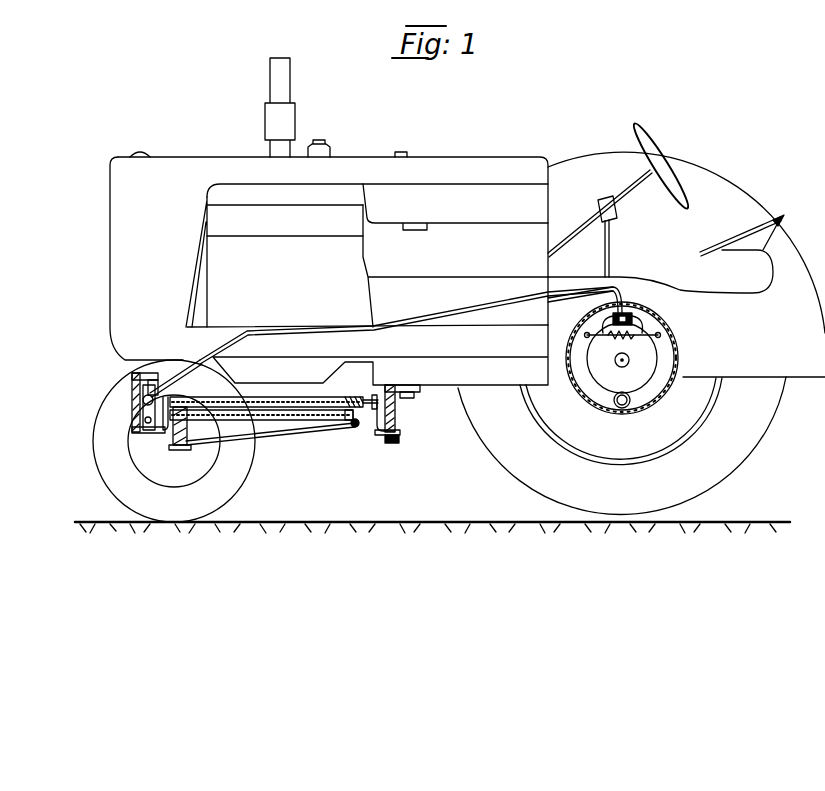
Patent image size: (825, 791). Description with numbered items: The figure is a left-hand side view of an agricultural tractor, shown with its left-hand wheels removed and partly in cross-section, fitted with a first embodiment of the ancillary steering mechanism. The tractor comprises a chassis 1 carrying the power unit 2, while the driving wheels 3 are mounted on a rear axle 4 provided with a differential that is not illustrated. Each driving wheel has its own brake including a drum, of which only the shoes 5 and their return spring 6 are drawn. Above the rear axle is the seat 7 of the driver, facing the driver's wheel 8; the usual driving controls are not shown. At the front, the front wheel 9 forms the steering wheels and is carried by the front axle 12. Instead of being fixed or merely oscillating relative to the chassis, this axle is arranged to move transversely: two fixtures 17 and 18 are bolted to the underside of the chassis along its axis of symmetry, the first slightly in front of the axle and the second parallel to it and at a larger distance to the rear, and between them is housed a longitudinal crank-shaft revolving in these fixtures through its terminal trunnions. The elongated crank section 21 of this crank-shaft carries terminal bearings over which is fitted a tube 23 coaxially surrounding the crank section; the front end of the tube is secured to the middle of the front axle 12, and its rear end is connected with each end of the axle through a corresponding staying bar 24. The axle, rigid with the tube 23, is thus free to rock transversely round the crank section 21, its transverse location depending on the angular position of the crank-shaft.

The chassis 1 is at (443, 370).
The power unit 2 is at (248, 200).
The driving wheels 3 is at (722, 392).
The rear axle 4 is at (628, 367).
The shoes 5 is at (676, 369).
The return spring 6 is at (635, 352).
The seat 7 is at (745, 228).
The driver's wheel 8 is at (640, 130).
The front wheel 9 is at (130, 460).
The front axle 12 is at (185, 448).
The fixture 17 is at (132, 381).
The fixture 18 is at (401, 419).
The crank section 21 is at (347, 424).
The tube 23 is at (271, 425).
The staying bar 24 is at (305, 428).